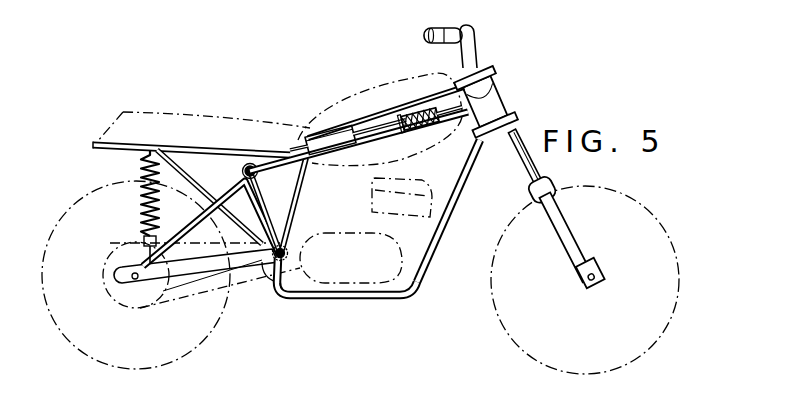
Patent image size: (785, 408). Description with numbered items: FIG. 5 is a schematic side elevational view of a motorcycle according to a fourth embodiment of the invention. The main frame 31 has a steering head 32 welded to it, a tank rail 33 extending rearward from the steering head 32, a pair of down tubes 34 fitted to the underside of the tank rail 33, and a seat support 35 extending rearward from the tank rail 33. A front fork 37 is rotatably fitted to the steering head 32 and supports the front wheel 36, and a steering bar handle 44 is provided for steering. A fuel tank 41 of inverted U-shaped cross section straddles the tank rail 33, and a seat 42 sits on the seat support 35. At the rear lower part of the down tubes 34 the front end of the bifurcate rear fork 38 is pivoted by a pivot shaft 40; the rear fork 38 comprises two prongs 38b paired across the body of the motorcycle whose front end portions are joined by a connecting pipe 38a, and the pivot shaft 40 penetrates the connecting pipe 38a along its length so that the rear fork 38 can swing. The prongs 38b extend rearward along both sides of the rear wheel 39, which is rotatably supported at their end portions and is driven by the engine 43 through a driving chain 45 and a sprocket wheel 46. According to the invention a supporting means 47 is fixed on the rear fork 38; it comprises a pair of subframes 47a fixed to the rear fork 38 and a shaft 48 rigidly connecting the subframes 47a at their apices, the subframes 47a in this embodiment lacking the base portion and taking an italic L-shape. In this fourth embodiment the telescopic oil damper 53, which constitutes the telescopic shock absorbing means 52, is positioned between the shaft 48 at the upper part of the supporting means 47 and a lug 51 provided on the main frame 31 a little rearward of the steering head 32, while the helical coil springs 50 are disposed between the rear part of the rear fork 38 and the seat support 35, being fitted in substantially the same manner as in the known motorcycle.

The main frame 31 is at (417, 283).
The steering head 32 is at (500, 108).
The tank rail 33 is at (373, 122).
The down tubes 34 is at (438, 235).
The seat support 35 is at (123, 150).
The front wheel 36 is at (677, 318).
The front fork 37 is at (573, 255).
The bifurcate rear fork 38 is at (190, 283).
The connecting pipe 38a is at (292, 253).
The prongs 38b is at (266, 280).
The rear wheel 39 is at (45, 300).
The pivot shaft 40 is at (283, 289).
The fuel tank 41 is at (328, 116).
The seat 42 is at (122, 112).
The engine 43 is at (382, 272).
The steering bar handle 44 is at (456, 38).
The driving chain 45 is at (172, 307).
The sprocket wheel 46 is at (107, 306).
The supporting means 47 is at (222, 186).
The triangular subframes 47a is at (297, 217).
The shaft 48 is at (258, 174).
The helical coil springs 50 is at (146, 202).
The lug 51 is at (412, 114).
The telescopic shock absorbing means 52 is at (292, 151).
The telescopic oil damper 53 is at (294, 143).